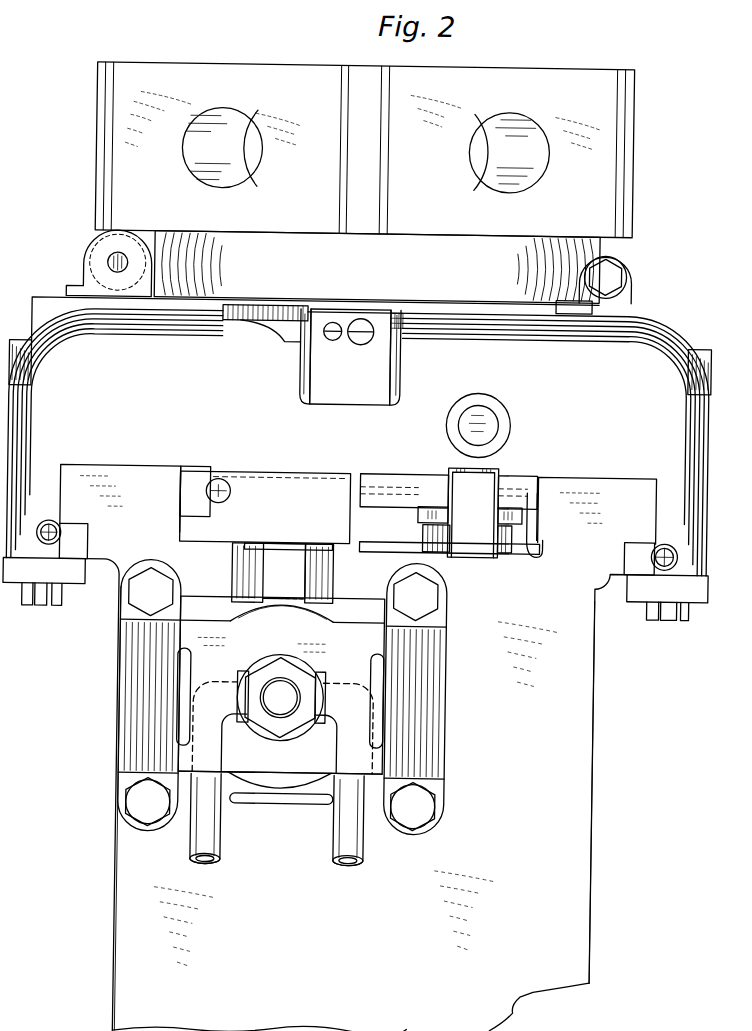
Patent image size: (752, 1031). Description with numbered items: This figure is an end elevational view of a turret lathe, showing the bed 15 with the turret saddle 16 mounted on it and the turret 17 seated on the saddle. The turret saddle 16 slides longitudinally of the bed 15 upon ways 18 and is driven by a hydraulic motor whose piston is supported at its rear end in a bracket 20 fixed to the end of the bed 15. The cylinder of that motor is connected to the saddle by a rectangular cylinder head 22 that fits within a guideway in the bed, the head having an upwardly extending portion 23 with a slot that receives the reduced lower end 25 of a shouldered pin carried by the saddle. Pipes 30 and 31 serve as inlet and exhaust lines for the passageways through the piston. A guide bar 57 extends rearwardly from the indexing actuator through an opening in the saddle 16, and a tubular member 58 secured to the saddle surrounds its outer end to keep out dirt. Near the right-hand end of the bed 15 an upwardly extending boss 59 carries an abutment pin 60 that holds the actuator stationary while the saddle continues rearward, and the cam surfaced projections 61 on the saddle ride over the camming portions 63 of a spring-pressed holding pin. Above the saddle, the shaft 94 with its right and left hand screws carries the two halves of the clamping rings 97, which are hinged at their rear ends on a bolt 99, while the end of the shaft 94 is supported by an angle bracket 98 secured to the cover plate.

The bed 15 is at (574, 788).
The turret saddle 16 is at (652, 336).
The turret 17 is at (555, 80).
The ways 18 is at (134, 481).
The bracket 20 is at (442, 681).
The cylinder head 22 is at (351, 628).
The upwardly extending portion 23 is at (266, 578).
The reduced lower end 25 is at (288, 548).
The pipe 30 is at (218, 845).
The pipe 31 is at (343, 851).
The guide bar 57 is at (457, 431).
The tubular member 58 is at (496, 410).
The boss 59 is at (488, 547).
The abutment pin 60 is at (484, 474).
The cam surfaced projections 61 is at (421, 512).
The camming portions 63 is at (426, 527).
The shaft 94 is at (126, 266).
The clamping rings 97 is at (82, 246).
The angle bracket 98 is at (104, 266).
The bolt 99 is at (616, 272).